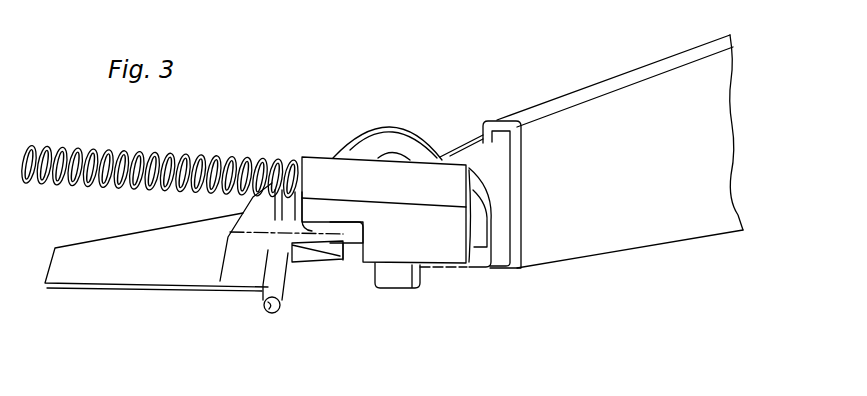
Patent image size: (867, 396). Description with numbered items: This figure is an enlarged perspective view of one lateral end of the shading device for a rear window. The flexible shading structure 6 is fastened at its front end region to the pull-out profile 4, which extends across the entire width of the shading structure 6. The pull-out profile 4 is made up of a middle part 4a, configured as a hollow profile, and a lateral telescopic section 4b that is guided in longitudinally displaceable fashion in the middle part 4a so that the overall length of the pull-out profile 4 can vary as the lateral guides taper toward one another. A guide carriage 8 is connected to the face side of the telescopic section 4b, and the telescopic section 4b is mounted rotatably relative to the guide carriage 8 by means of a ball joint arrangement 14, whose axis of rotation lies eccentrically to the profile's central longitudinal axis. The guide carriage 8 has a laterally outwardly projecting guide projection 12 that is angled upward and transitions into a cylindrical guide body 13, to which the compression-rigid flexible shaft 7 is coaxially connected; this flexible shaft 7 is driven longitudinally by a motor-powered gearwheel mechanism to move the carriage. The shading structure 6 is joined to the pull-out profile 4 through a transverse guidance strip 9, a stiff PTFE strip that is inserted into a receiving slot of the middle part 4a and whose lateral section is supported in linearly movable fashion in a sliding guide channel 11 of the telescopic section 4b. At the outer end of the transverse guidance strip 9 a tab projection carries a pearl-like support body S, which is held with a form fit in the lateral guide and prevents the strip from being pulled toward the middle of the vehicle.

The pull-out profile 4 is at (597, 266).
The middle part 4a is at (670, 237).
The telescopic section 4b is at (480, 157).
The shading structure 6 is at (125, 277).
The flexible shaft 7 is at (186, 147).
The guide carriage 8 is at (328, 149).
The transverse guidance strip 9 is at (278, 250).
The sliding guide channel 11 is at (327, 263).
The guide projection 12 is at (473, 262).
The guide body 13 is at (390, 177).
The ball joint arrangement 14 is at (393, 157).
The support body S is at (273, 316).